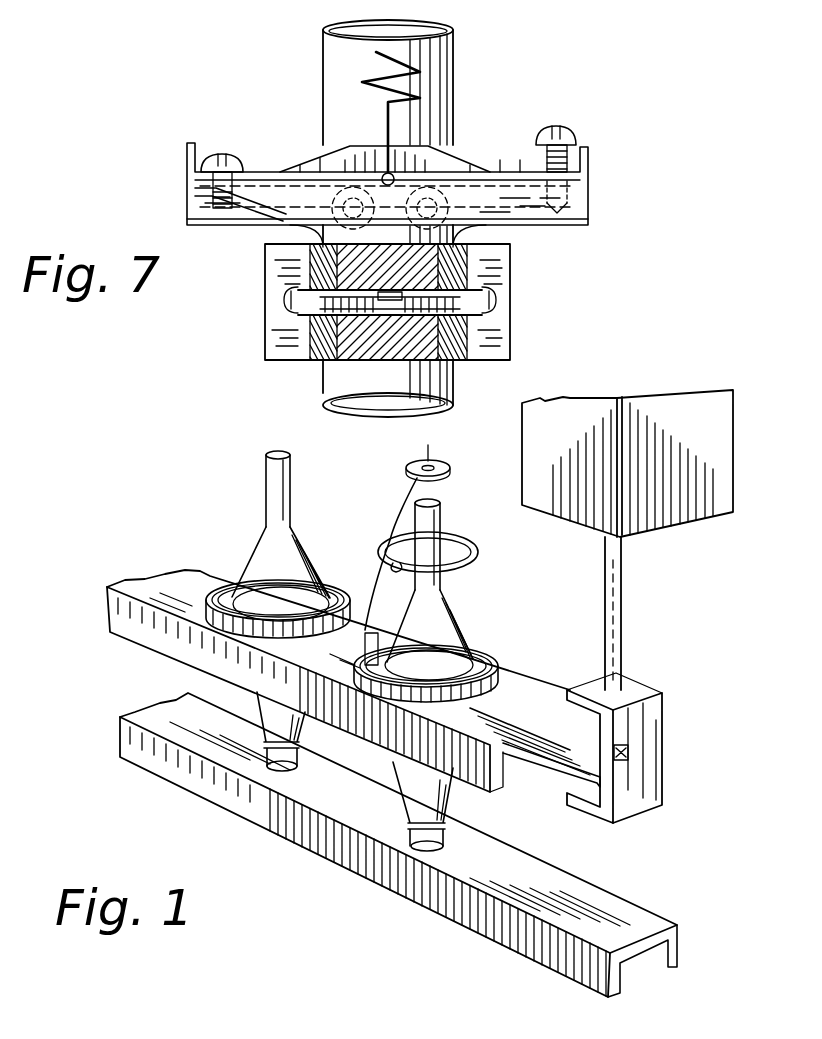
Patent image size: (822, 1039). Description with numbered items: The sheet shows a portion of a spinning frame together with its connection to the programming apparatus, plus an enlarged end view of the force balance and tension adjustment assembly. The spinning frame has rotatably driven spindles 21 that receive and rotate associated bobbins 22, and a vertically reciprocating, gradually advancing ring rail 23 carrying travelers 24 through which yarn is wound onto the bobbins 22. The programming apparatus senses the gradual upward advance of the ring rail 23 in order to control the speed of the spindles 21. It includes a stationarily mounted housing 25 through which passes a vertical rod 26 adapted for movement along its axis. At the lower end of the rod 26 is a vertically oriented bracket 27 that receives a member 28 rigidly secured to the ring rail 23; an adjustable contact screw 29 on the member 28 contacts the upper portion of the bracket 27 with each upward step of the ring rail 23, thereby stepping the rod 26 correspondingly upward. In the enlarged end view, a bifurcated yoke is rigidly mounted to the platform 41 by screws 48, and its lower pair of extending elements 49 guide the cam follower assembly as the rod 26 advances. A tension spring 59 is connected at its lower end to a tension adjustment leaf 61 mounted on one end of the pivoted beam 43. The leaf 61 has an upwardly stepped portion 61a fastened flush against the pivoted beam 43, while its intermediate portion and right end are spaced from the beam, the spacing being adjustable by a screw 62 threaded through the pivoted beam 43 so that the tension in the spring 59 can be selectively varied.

In FIG. 1, the spindle 21 is at (298, 762).
In FIG. 1, the bobbin 22 is at (306, 548).
In FIG. 1, the ring rail 23 is at (122, 628).
In FIG. 1, the traveler 24 is at (366, 640).
In FIG. 1, the housing 25 is at (702, 510).
In FIG. 7, the vertical rod 26 is at (328, 75).
In FIG. 1, the vertical rod 26 is at (625, 633).
In FIG. 1, the bracket 27 is at (653, 722).
In FIG. 1, the member 28 is at (545, 760).
In FIG. 1, the adjustable contact screw 29 is at (605, 749).
In FIG. 7, the platform 41 is at (265, 318).
In FIG. 7, the pivoted beam 43 is at (270, 172).
In FIG. 7, the screws 48 is at (298, 292).
In FIG. 7, the extending elements 49 is at (470, 327).
In FIG. 7, the tension spring 59 is at (410, 97).
In FIG. 7, the tension adjustment leaf 61 is at (453, 147).
In FIG. 7, the upwardly stepped portion 61a is at (192, 196).
In FIG. 7, the screw 62 is at (576, 131).